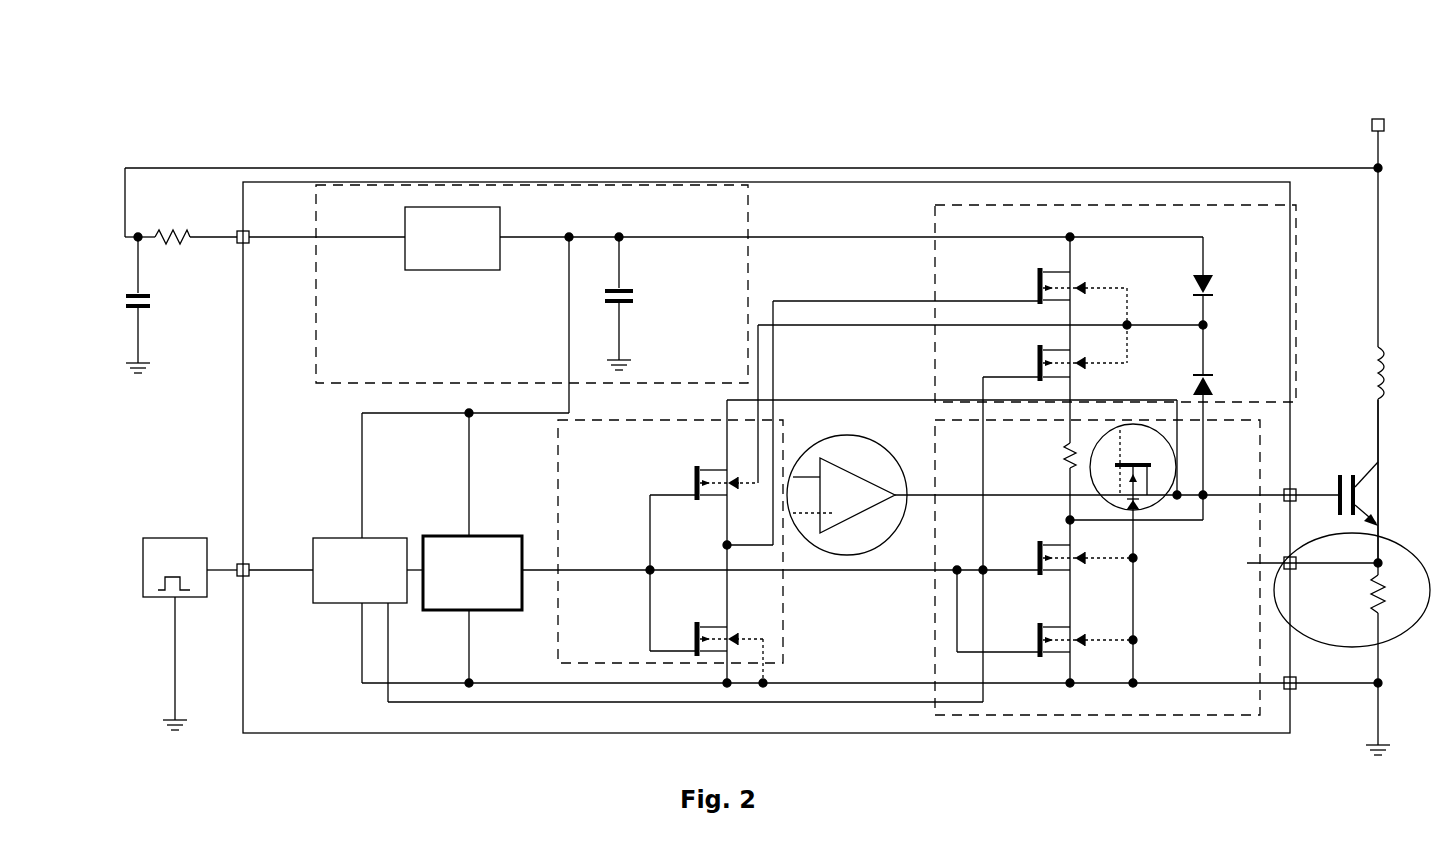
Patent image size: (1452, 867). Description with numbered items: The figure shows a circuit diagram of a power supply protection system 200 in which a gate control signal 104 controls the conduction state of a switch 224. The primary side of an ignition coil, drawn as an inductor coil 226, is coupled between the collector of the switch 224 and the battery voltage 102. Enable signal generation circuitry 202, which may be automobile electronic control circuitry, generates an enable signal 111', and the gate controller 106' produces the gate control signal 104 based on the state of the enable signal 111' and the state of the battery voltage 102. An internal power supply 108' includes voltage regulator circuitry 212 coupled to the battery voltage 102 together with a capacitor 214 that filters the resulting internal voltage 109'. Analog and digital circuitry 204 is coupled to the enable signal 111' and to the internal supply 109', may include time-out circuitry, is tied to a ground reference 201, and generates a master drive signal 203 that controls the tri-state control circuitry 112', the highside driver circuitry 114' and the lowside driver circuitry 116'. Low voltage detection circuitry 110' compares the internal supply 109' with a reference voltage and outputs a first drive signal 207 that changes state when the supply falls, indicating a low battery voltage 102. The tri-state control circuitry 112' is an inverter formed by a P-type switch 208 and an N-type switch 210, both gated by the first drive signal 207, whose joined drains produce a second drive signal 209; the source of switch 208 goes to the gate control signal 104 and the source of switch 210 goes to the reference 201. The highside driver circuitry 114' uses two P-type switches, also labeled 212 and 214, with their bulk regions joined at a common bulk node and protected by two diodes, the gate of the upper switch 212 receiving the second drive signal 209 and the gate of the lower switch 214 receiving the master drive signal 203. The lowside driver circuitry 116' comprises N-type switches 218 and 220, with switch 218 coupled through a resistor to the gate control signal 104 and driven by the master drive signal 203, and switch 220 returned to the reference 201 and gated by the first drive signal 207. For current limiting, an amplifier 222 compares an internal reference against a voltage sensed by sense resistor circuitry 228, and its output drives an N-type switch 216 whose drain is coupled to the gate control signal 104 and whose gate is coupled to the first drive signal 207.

The power supply protection system 200 is at (680, 54).
The battery voltage 102 is at (1374, 221).
The gate control signal 104 is at (1117, 492).
The gate controller 106' is at (751, 179).
The internal power supply 108' is at (580, 283).
The internal voltage 109' is at (851, 248).
The low voltage detection circuitry 110' is at (475, 548).
The enable signal 111' is at (276, 580).
The tri-state control circuitry 112' is at (635, 541).
The highside driver circuitry 114' is at (1078, 303).
The lowside driver circuitry 116' is at (1060, 567).
The reference 201 is at (431, 466).
The enable signal generation circuitry 202 is at (180, 615).
The master drive signal 203 is at (354, 657).
The analog and digital circuitry 204 is at (342, 589).
The first drive signal 207 is at (723, 554).
The P-type switch 208 is at (695, 450).
The second drive signal 209 is at (743, 578).
The N-type switch 210 is at (707, 591).
The voltage regulator circuitry 212 is at (688, 266).
The capacitor 214 is at (866, 309).
The N-type switch 216 is at (1150, 459).
The N-type switch 218 is at (1062, 548).
The N-type switch 220 is at (1045, 613).
The amplifier 222 is at (847, 484).
The switch 224 is at (1309, 481).
The inductor coil 226 is at (1320, 455).
The sense resistor circuitry 228 is at (1352, 644).